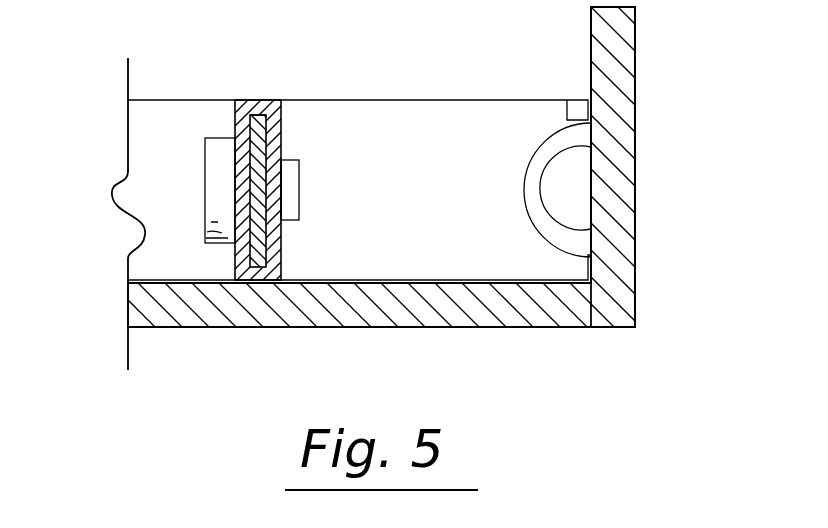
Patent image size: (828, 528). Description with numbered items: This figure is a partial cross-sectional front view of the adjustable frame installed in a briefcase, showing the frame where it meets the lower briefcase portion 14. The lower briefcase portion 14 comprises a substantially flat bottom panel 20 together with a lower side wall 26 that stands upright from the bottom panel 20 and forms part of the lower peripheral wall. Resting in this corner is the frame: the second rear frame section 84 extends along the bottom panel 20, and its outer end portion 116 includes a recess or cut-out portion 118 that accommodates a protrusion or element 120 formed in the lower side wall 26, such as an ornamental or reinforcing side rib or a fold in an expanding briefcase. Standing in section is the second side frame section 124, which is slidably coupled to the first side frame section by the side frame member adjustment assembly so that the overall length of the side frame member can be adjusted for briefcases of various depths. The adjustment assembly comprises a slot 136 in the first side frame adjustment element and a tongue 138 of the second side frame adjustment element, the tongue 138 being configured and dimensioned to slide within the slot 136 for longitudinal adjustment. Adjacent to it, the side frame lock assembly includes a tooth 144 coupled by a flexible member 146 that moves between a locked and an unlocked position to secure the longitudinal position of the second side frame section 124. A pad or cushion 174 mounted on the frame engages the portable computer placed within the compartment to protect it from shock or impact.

The lower briefcase portion 14 is at (610, 337).
The bottom panel 20 is at (520, 322).
The lower side wall 26 is at (635, 44).
The second rear frame section 84 is at (317, 108).
The outer end portion 116 is at (457, 105).
The recess or cut-out portion 118 is at (561, 141).
The protrusion or element 120 is at (573, 213).
The second side frame section 124 is at (233, 117).
The slot 136 is at (263, 106).
The tongue 138 is at (262, 243).
The tooth 144 is at (287, 197).
The flexible member 146 is at (290, 172).
The pad or cushion 174 is at (208, 153).